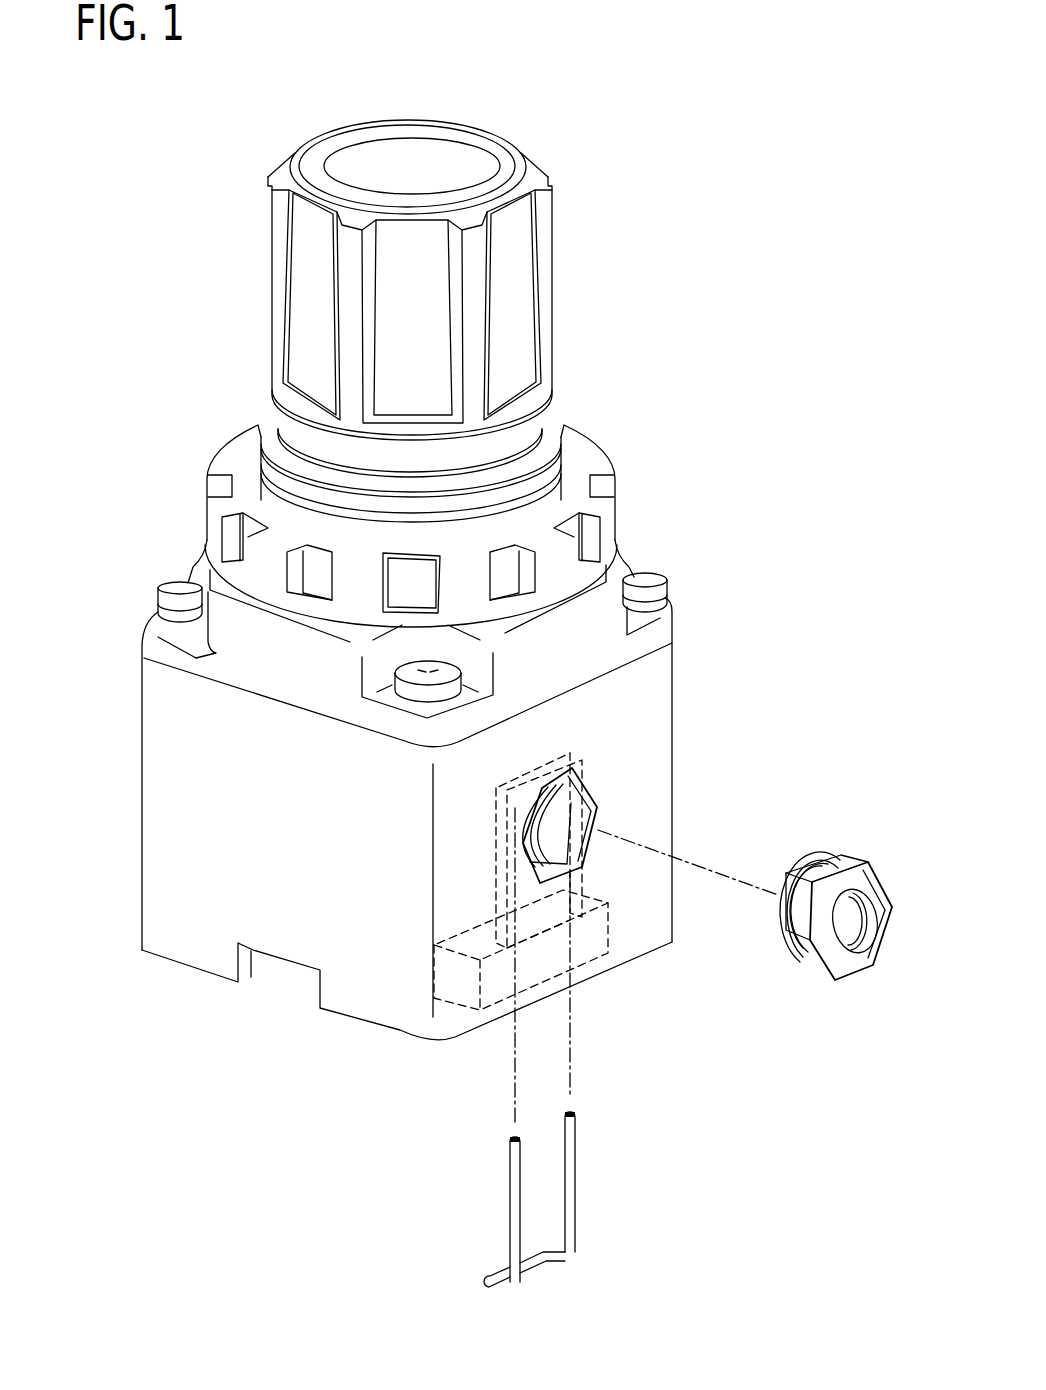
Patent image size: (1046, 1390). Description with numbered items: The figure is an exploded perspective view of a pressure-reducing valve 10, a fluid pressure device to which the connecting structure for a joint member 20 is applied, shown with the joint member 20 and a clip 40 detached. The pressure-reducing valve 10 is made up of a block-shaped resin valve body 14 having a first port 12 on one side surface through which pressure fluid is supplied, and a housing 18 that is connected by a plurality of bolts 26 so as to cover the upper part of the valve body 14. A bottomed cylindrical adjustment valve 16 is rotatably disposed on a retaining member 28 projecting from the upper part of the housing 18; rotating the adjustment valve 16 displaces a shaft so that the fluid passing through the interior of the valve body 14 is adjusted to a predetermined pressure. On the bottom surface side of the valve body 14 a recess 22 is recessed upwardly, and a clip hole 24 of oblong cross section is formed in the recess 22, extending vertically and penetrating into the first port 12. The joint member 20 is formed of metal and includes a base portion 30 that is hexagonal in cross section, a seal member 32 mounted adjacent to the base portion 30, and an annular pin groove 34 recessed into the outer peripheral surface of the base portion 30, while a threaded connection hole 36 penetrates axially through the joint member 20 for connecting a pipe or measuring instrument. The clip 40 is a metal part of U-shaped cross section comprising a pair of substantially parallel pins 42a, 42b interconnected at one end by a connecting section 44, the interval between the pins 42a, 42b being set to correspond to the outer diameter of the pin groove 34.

The pressure-reducing valve 10 is at (688, 132).
The first port 12 is at (589, 780).
The valve body 14 is at (198, 977).
The adjustment valve 16 is at (251, 276).
The housing 18 is at (158, 651).
The joint member 20 is at (823, 911).
The recess 22 is at (433, 976).
The clip hole 24 is at (497, 885).
The bolts 26 is at (176, 586).
The retaining member 28 is at (346, 482).
The base portion 30 is at (863, 960).
The seal member 32 is at (780, 912).
The pin groove 34 is at (798, 892).
The connection hole 36 is at (862, 923).
The clip 40 is at (548, 1234).
The pin 42a is at (567, 1175).
The pin 42b is at (510, 1177).
The connecting section 44 is at (540, 1267).